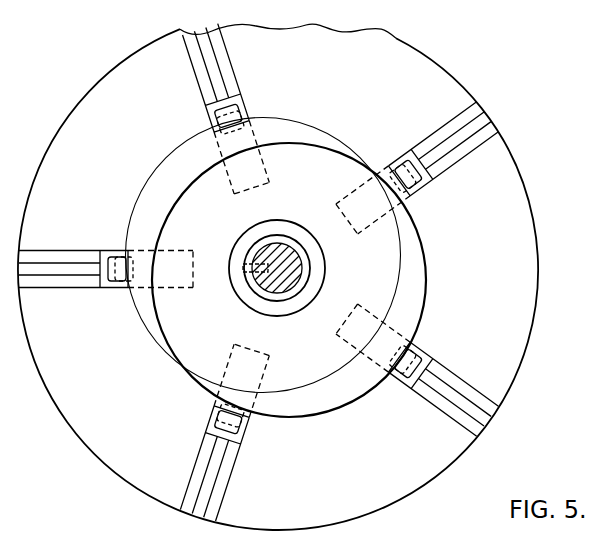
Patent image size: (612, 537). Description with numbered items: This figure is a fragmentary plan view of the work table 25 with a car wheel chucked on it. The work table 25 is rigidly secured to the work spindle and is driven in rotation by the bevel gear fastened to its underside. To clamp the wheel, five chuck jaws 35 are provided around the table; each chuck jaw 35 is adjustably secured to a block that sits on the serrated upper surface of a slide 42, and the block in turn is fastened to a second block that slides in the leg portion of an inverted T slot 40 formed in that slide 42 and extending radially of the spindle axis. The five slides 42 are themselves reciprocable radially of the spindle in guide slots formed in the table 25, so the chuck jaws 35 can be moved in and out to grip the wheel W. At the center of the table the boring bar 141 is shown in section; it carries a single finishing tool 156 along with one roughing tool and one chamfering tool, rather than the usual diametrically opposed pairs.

The work table 25 is at (521, 311).
The chuck jaw 35 is at (233, 115).
The inverted T slot 40 is at (218, 80).
The slide 42 is at (453, 412).
The boring bar 141 is at (277, 289).
The finishing tool 156 is at (247, 273).
The wafer W is at (422, 297).